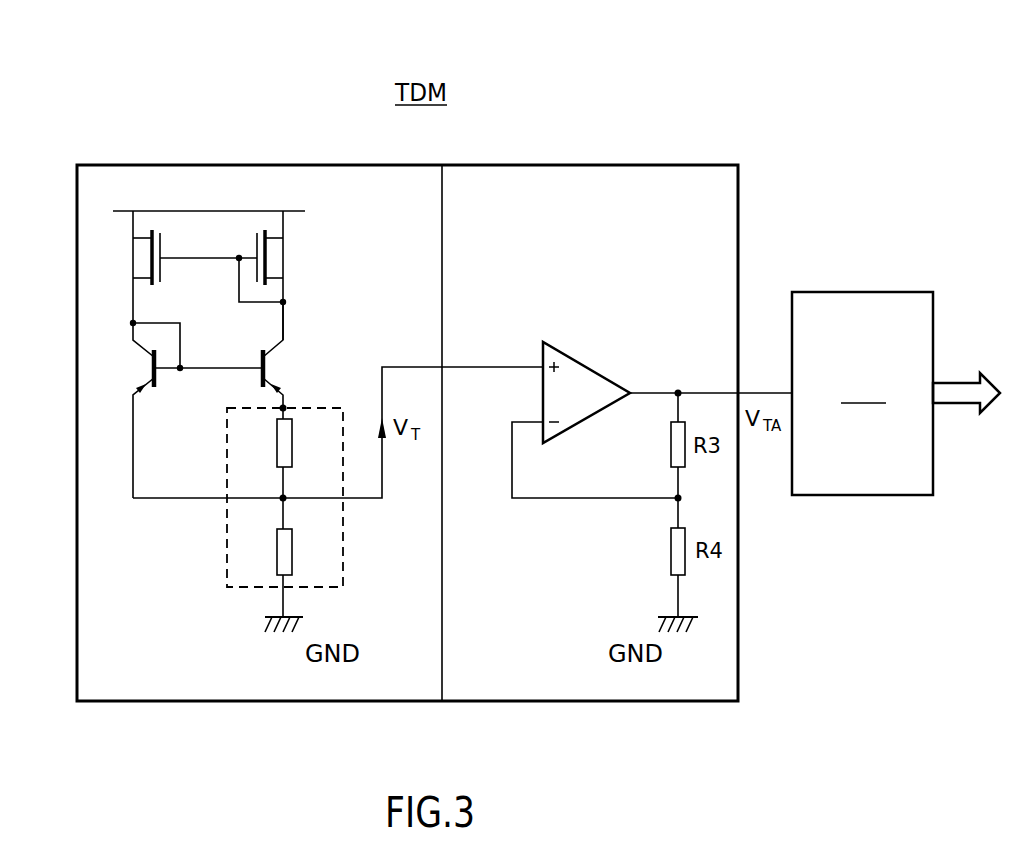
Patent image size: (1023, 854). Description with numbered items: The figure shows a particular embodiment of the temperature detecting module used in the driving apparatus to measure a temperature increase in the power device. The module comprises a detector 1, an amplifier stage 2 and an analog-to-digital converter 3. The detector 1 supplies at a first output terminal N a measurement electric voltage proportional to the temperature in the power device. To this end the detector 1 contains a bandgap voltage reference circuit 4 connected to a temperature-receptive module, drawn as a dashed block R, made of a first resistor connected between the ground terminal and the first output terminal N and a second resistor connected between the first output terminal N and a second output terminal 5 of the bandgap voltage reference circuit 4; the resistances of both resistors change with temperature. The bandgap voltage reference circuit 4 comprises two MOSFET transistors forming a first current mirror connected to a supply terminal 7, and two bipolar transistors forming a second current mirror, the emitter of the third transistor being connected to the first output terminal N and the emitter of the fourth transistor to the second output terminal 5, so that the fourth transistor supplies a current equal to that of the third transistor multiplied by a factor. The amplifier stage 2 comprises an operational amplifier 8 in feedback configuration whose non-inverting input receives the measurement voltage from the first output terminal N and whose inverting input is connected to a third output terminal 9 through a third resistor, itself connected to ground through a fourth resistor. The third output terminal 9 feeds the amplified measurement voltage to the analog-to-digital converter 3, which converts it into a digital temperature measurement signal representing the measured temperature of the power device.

The detector 1 is at (231, 161).
The amplifier stage 2 is at (576, 160).
The analog-to-digital converter 3 is at (876, 285).
The bandgap voltage reference circuit 4 is at (307, 315).
The second output terminal 5 is at (287, 406).
The supply terminal 7 is at (160, 211).
The operational amplifier 8 is at (582, 360).
The third output terminal 9 is at (678, 390).
The first output terminal N is at (287, 501).
The resistor divider R1/R2 R is at (225, 516).